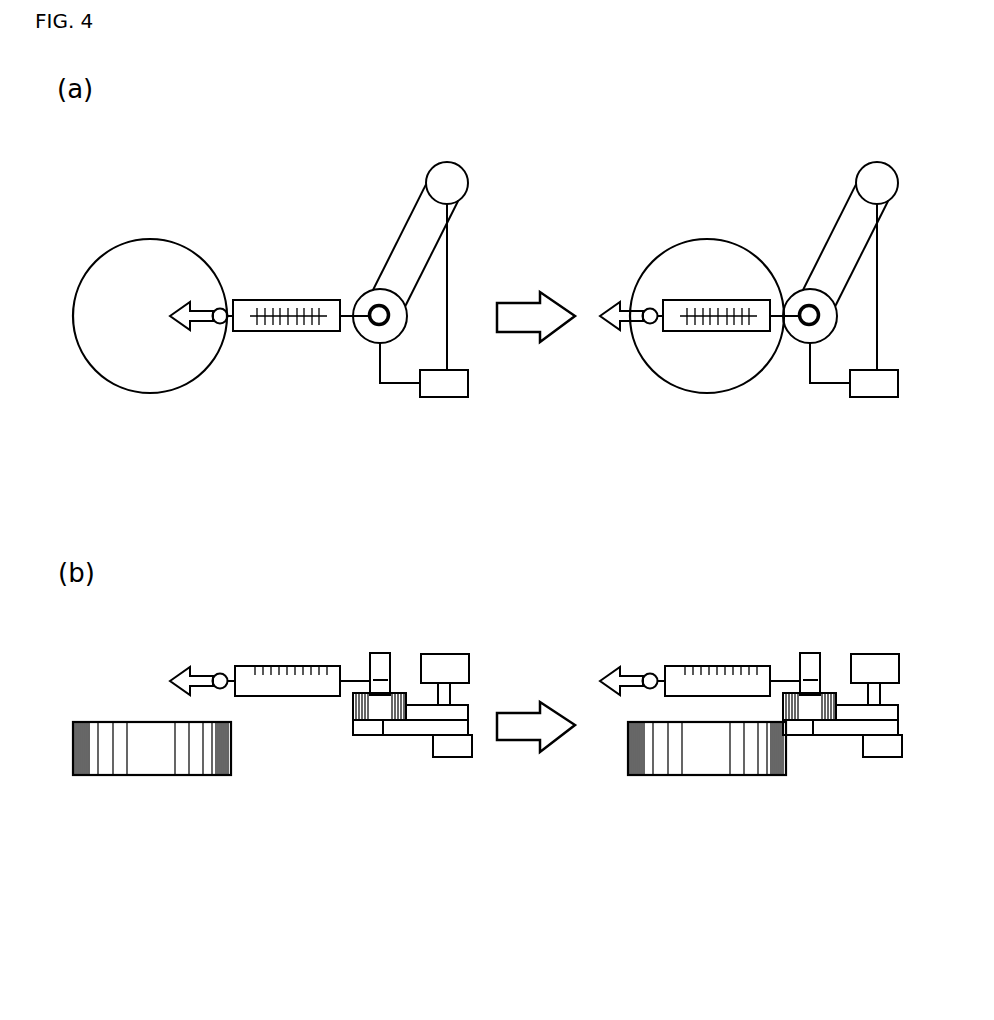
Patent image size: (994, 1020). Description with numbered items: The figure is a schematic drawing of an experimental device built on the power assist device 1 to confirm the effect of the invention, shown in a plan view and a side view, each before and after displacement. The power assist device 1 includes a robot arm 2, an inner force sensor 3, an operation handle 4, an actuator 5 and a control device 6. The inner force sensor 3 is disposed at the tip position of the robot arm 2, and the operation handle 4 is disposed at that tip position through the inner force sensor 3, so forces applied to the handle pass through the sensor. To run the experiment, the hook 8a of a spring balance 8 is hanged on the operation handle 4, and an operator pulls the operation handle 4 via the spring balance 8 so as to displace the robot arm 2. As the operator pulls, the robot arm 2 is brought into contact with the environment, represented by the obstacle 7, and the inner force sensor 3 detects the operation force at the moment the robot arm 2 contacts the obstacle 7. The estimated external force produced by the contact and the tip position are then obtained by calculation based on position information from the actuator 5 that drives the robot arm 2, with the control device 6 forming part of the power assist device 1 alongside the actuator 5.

The power assist device 1 is at (327, 149).
The robot arm 2 is at (401, 232).
The inner force sensor 3 is at (407, 316).
The operation handle 4 is at (373, 322).
The actuator 5 is at (425, 178).
The control device 6 is at (445, 398).
The obstacle 7 is at (150, 238).
The spring balance 8 is at (288, 333).
The hook 8a is at (376, 327).